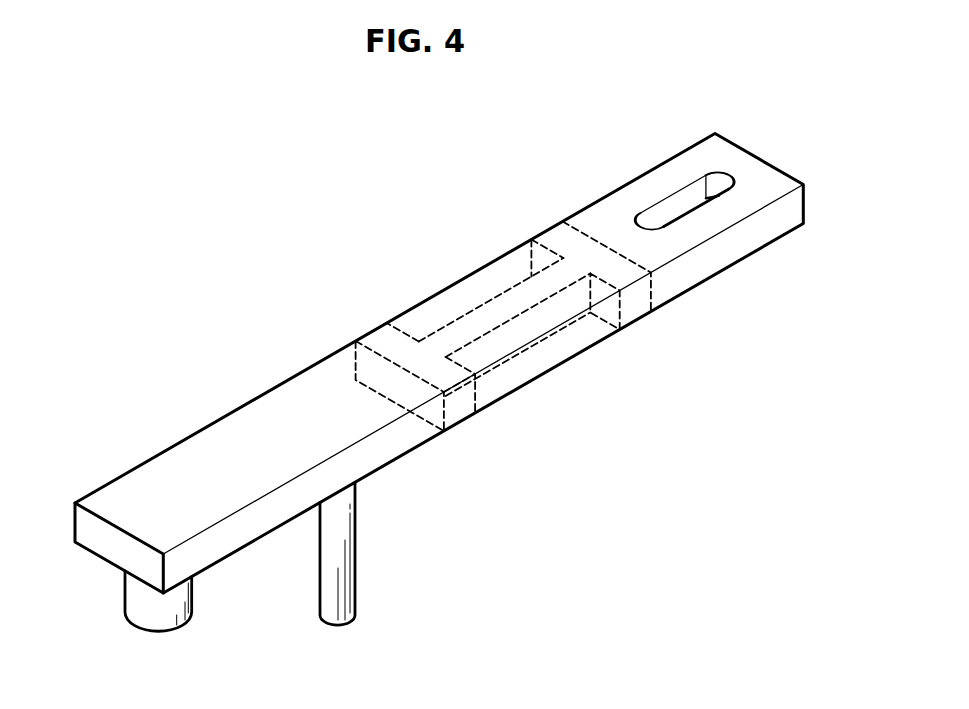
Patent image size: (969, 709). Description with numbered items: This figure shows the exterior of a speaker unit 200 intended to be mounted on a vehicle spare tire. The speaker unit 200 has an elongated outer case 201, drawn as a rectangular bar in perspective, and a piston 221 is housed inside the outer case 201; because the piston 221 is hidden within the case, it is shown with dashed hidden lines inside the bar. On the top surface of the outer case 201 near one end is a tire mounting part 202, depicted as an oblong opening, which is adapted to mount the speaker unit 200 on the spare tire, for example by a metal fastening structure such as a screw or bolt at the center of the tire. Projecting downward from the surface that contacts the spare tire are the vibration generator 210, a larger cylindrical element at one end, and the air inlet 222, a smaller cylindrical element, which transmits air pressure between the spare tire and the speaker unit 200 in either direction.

The speaker unit 200 is at (80, 351).
The outer case 201 is at (267, 408).
The tire mounting part 202 is at (676, 207).
The vibration generator 210 is at (131, 594).
The piston 221 is at (632, 312).
The air inlet 222 is at (355, 561).